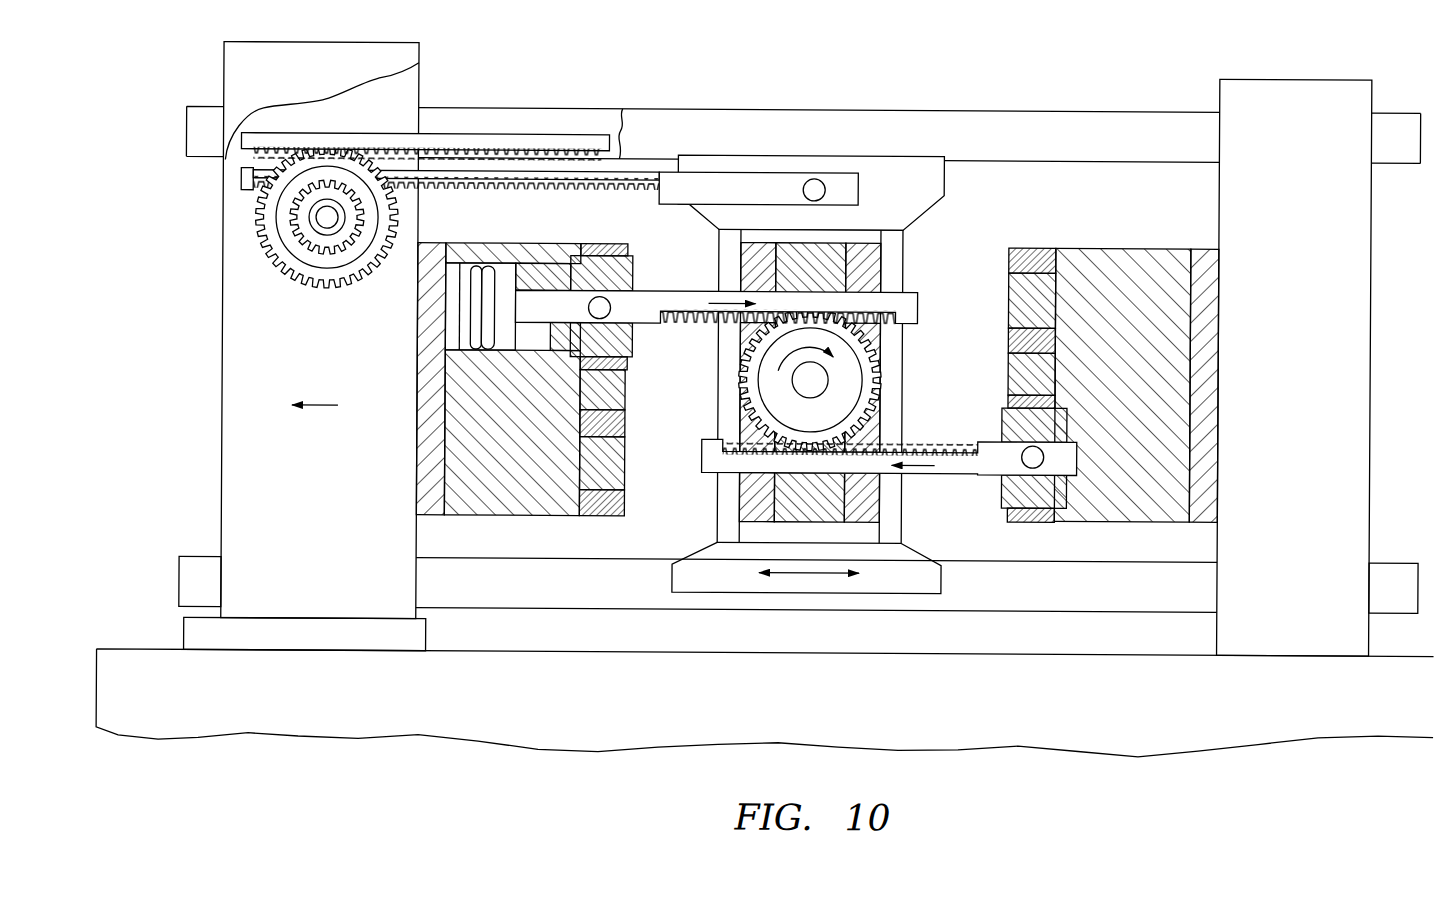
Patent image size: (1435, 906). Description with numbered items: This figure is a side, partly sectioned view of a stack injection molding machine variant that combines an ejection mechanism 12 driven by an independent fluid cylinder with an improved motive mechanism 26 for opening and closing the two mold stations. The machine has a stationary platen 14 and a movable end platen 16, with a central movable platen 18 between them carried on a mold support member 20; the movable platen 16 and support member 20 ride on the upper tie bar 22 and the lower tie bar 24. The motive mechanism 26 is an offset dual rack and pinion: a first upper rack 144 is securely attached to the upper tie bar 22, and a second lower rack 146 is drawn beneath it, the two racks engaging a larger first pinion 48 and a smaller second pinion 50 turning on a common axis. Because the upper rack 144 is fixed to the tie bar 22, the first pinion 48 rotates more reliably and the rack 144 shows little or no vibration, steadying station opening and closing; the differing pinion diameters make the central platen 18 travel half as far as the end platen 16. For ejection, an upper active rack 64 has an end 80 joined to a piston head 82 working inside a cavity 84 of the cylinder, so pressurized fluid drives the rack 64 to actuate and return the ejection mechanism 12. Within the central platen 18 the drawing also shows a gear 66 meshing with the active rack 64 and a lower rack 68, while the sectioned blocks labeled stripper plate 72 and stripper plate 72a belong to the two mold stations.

The ejection mechanism 12 is at (650, 512).
The stationary platen 14 is at (1338, 339).
The movable platen 16 is at (237, 374).
The central movable platen 18 is at (830, 265).
The mold support member 20 is at (933, 575).
The upper tie bar 22 is at (902, 116).
The lower tie bar 24 is at (190, 565).
The motive mechanism 26 is at (636, 119).
The first rotating pinion 48 is at (306, 158).
The second rotating pinion 50 is at (305, 245).
The upper active rack 64 is at (665, 296).
The gear 66 is at (868, 370).
The lower rack 68 is at (967, 471).
The stripper plate 72 is at (1008, 293).
The left housing seals 72a is at (622, 391).
The end of upper active rack 80 is at (523, 280).
The piston head 82 is at (468, 268).
The cavity 84 is at (452, 323).
The first upper rack 144 is at (458, 140).
The lower rack 146 is at (537, 176).